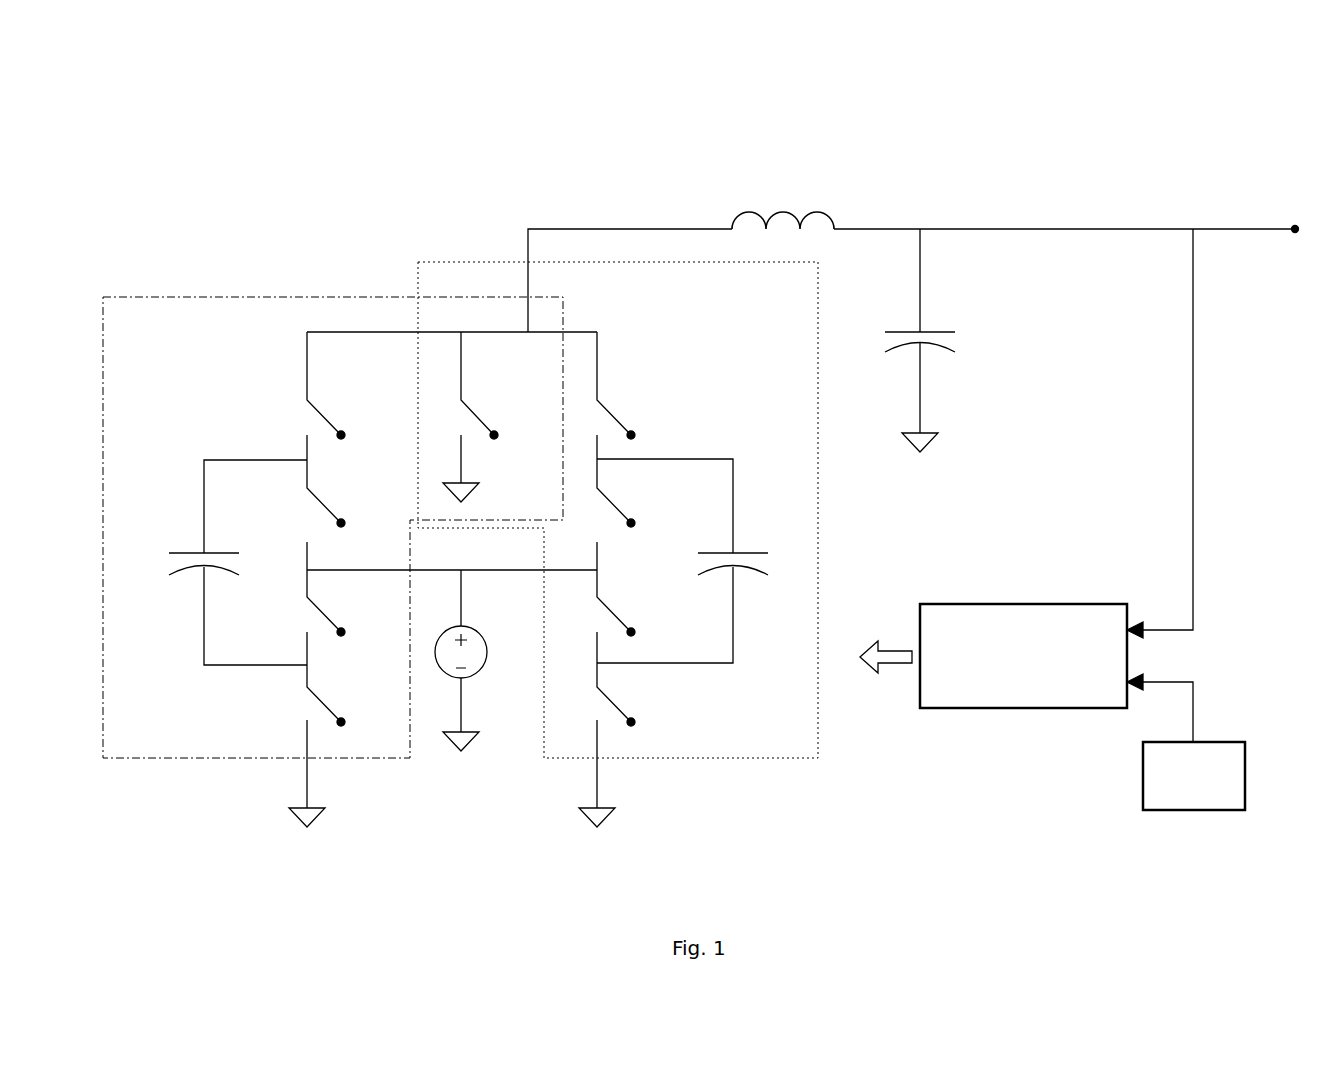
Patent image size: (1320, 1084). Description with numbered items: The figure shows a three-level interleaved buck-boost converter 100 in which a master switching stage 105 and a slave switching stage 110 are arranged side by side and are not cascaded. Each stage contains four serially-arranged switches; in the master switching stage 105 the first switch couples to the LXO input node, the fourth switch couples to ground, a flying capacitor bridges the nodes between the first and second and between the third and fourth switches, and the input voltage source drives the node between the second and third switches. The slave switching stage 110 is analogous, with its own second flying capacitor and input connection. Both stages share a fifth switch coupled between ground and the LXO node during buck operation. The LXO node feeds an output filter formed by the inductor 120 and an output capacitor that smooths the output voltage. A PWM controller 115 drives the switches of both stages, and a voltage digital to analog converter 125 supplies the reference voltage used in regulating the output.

The three-level interleaved buck-boost converter 100 is at (589, 84).
The master switching stage 105 is at (180, 297).
The slave switching stage 110 is at (821, 510).
The PWM controller 115 is at (998, 604).
The inductor 120 is at (742, 173).
The voltage DAC 125 is at (1138, 808).